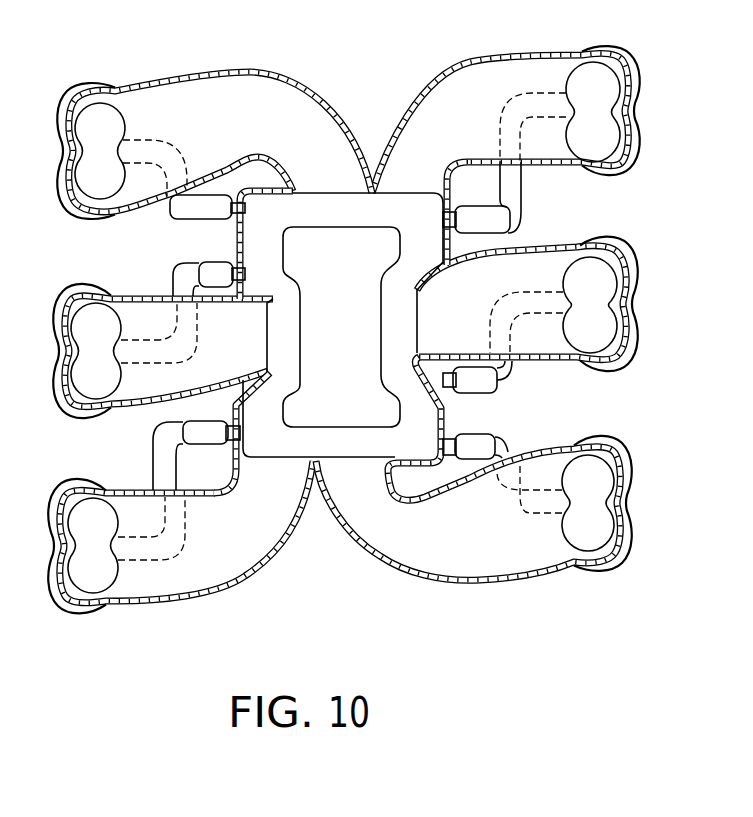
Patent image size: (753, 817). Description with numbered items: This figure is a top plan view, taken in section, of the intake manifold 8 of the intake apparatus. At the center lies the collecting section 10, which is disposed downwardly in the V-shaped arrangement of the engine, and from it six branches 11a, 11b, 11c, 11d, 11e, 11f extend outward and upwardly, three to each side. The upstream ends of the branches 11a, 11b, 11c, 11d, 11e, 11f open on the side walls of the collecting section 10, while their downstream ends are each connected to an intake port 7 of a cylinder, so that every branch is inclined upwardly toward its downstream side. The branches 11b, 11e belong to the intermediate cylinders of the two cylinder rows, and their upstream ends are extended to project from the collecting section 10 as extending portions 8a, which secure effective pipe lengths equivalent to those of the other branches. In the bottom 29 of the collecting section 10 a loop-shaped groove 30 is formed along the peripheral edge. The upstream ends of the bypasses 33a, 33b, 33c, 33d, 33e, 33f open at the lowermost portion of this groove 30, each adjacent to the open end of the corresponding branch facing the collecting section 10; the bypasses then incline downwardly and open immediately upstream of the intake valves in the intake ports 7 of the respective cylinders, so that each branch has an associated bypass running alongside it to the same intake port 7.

The intake port 7 is at (603, 270).
The intake manifold 8 is at (410, 90).
The extending portion 8a is at (447, 252).
The collecting section 10 is at (237, 237).
The branch 11a is at (217, 97).
The branch 11b is at (137, 310).
The branch 11c is at (212, 570).
The branch 11d is at (508, 563).
The branch 11e is at (543, 247).
The branch 11f is at (500, 70).
The bottom 29 is at (365, 400).
The loop-shaped groove 30 is at (275, 447).
The bypass 33a is at (183, 204).
The bypass 33b is at (183, 277).
The bypass 33c is at (183, 444).
The bypass 33d is at (490, 440).
The bypass 33e is at (502, 378).
The bypass 33f is at (520, 183).